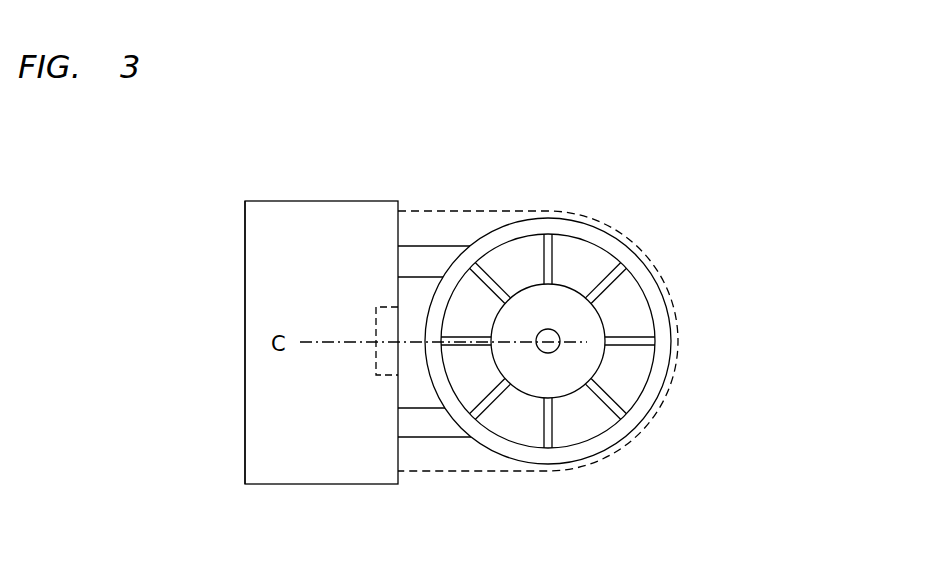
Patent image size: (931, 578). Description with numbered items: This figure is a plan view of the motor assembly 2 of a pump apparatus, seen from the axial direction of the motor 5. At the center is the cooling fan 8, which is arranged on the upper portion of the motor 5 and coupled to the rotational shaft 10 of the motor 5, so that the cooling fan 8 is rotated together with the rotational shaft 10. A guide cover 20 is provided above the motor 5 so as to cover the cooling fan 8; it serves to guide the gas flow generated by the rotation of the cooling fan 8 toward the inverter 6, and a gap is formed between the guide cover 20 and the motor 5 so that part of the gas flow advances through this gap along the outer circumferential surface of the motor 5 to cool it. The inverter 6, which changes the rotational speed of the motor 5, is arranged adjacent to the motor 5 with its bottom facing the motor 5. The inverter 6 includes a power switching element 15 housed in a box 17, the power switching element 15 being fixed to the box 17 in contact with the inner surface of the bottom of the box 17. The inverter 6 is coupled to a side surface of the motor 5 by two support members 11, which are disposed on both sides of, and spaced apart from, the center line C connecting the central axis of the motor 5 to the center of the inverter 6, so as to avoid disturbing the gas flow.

The motor assembly 2 is at (598, 333).
The motor 5 is at (674, 337).
The inverter 6 is at (245, 372).
The cooling fan 8 is at (593, 240).
The rotational shaft 10 is at (548, 353).
The support members 11 is at (437, 245).
The power switching element 15 is at (376, 323).
The box 17 is at (245, 420).
The guide cover 20 is at (455, 210).